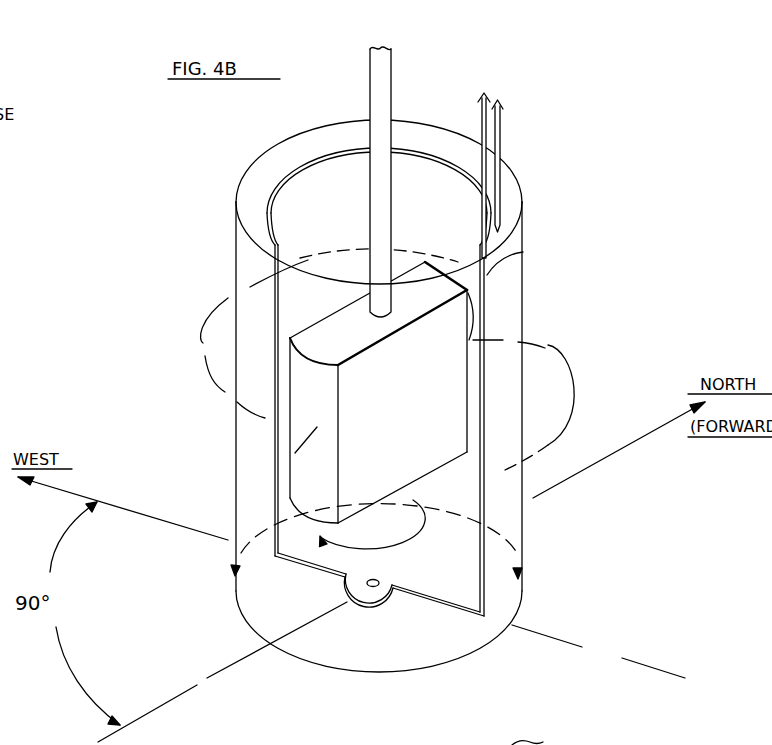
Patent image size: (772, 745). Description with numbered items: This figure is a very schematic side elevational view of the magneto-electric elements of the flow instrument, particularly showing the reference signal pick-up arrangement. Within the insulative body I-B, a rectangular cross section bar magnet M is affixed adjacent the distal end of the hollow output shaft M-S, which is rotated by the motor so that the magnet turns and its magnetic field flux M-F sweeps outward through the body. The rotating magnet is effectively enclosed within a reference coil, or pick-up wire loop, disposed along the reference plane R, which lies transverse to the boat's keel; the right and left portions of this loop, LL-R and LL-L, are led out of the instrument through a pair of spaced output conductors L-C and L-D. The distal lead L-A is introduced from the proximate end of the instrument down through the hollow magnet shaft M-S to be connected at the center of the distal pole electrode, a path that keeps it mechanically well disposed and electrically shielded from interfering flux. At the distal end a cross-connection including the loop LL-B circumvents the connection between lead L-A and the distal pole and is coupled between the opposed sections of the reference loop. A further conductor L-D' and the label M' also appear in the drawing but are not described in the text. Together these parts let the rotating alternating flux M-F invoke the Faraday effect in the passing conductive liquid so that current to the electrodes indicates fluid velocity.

The output shaft M-S is at (393, 72).
The output conductor L-C is at (481, 115).
The output conductor L-D is at (521, 166).
The liquid distributor ring L-D' is at (374, 174).
The left portion of loop LL LL-L is at (270, 280).
The right portion of loop LL LL-R is at (523, 252).
The loop LL-b LL-B is at (362, 598).
The distal lead L-A is at (380, 582).
The magnetic field flux M-F is at (220, 355).
The body I-B is at (520, 527).
The bar magnet M is at (381, 392).
The reference plane R is at (351, 577).
The magnet reference M' is at (543, 738).